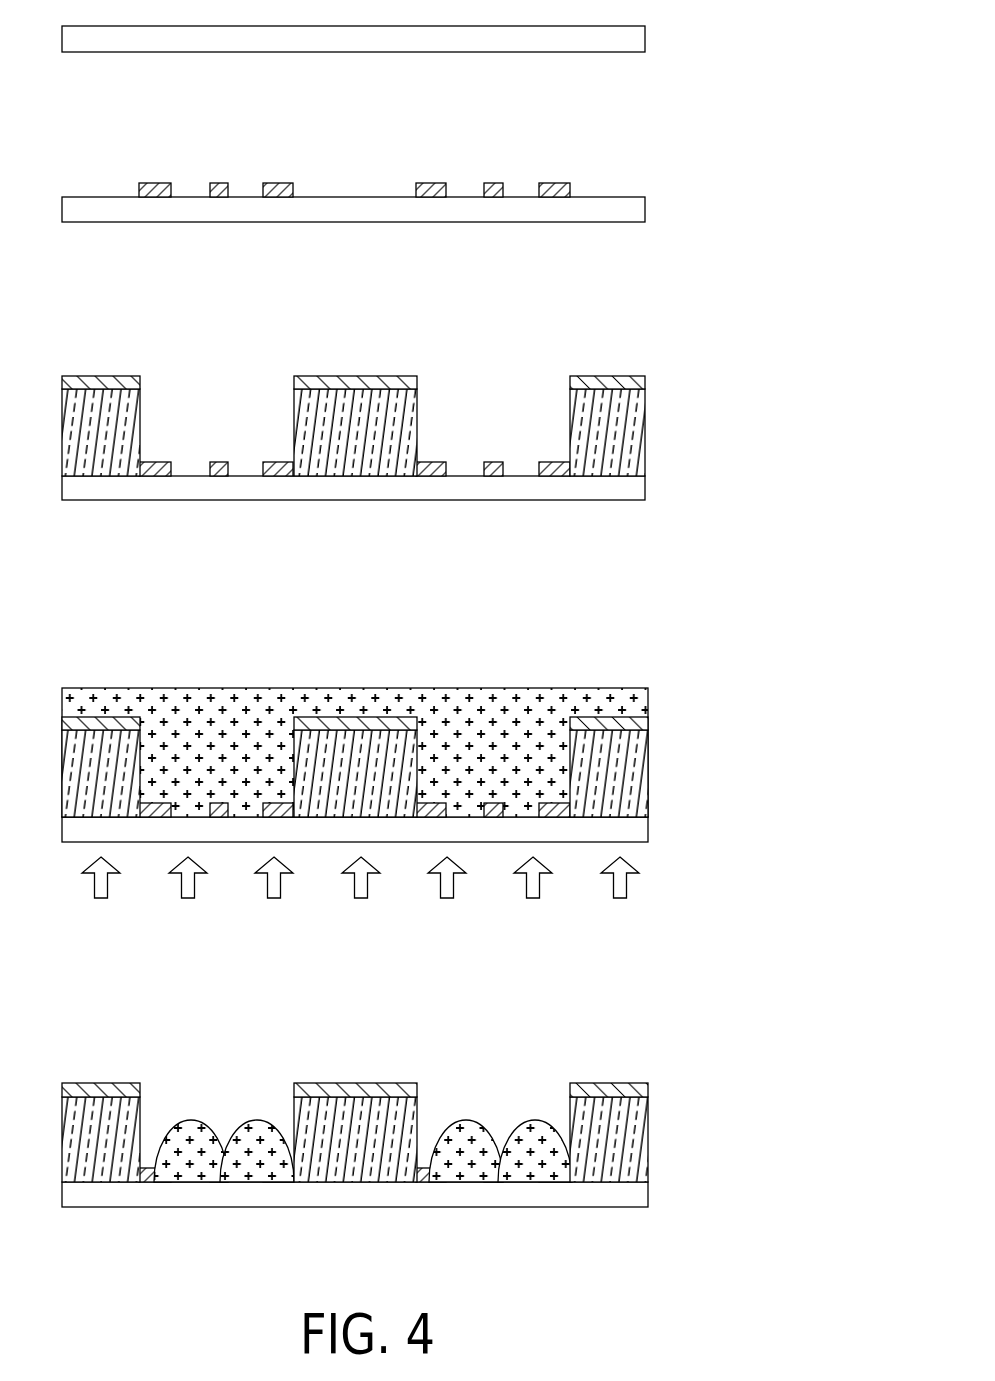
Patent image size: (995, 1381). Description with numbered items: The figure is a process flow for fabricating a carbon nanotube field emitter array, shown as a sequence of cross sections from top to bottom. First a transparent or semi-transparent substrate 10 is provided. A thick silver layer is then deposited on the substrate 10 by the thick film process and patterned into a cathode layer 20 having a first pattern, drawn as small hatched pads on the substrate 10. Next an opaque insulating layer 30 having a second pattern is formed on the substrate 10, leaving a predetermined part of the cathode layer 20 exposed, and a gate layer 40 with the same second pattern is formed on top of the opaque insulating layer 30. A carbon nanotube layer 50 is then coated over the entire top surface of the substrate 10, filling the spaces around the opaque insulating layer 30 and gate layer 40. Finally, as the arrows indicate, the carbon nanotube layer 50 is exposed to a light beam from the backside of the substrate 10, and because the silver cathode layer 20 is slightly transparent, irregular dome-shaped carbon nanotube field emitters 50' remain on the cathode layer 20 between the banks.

The substrate 10 is at (637, 33).
The cathode layer 20 is at (556, 190).
The opaque insulating layer 30 is at (633, 428).
The gate layer 40 is at (610, 377).
The carbon nanotube layer 50 is at (389, 742).
The carbon nanotube field emitter 50' is at (363, 1104).